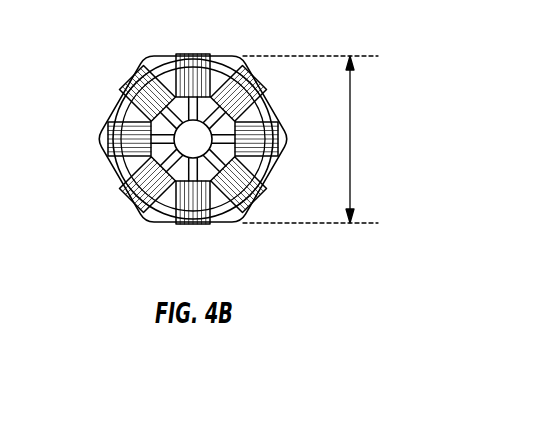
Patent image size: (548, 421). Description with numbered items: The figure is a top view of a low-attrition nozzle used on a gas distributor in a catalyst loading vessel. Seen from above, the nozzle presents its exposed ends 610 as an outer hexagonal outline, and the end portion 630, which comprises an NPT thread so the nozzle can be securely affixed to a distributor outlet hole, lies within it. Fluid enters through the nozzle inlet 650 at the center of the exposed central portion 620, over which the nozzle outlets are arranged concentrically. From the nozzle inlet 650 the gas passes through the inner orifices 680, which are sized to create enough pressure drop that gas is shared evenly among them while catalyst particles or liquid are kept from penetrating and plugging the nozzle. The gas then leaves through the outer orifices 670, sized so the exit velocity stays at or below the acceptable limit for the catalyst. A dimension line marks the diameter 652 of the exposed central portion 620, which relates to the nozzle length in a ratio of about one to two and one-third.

The exposed ends 610 is at (134, 203).
The exposed central portion 620 is at (121, 108).
The end portion 630 is at (252, 163).
The nozzle inlet 650 is at (193, 137).
The diameter 652 is at (350, 140).
The outer orifices 670 is at (248, 88).
The inner orifices 680 is at (173, 133).